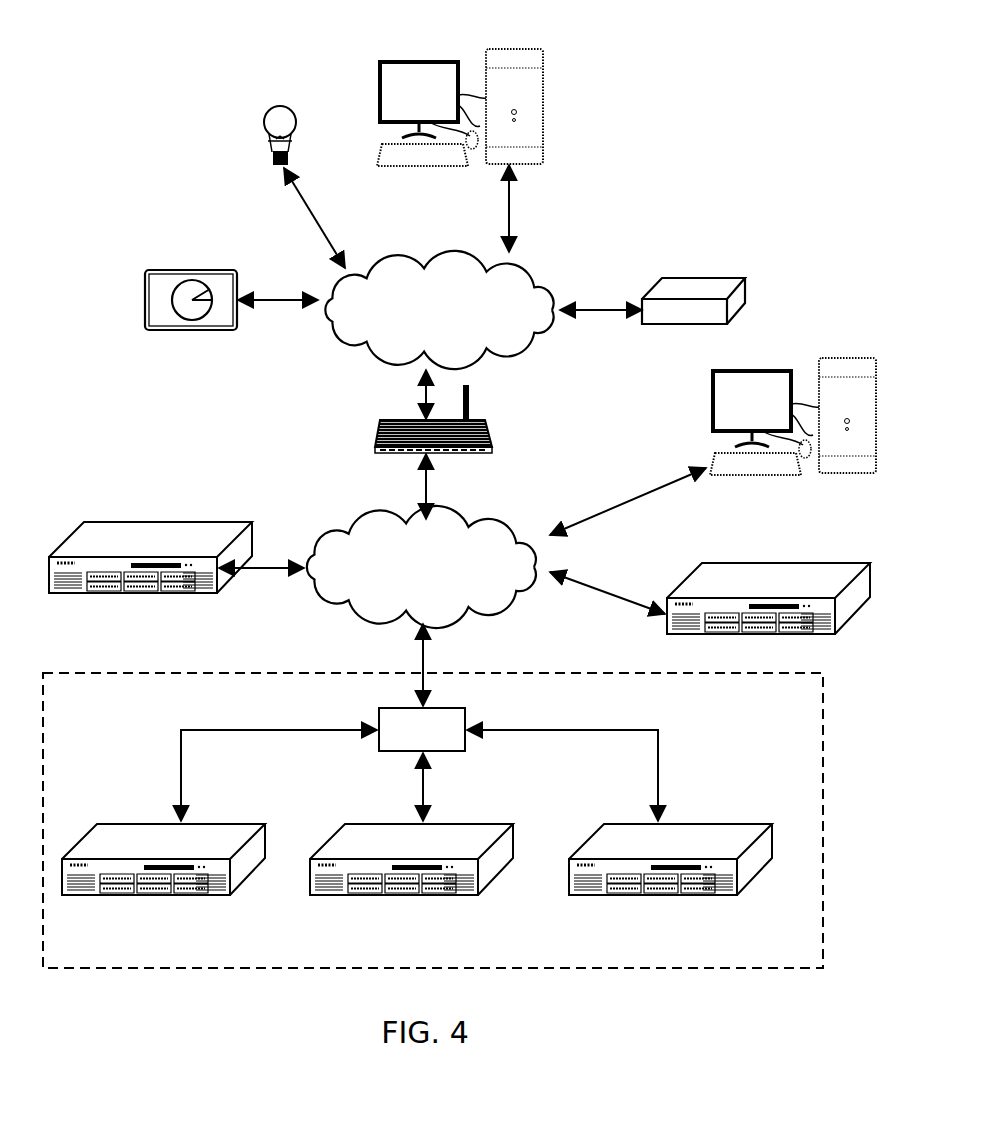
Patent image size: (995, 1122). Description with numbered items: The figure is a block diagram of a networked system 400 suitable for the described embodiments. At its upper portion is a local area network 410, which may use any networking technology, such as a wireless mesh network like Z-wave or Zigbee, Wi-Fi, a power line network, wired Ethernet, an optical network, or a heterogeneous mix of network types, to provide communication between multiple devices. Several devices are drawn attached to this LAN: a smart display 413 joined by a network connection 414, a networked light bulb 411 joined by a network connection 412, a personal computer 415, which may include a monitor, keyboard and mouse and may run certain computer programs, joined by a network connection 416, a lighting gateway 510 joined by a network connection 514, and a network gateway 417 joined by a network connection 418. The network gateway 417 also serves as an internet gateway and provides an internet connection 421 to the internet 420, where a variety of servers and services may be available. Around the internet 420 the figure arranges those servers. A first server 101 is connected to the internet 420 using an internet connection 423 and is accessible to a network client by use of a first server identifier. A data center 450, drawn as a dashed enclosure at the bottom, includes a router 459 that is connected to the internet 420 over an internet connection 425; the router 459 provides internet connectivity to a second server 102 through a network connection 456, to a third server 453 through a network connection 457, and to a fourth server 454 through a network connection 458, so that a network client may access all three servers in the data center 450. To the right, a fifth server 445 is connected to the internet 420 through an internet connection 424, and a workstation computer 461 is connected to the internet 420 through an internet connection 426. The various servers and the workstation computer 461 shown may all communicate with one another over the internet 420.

The networked system 400 is at (728, 90).
The local area network 410 is at (447, 257).
The networked light bulb 411 is at (265, 121).
The network connection 412 is at (315, 216).
The smart display 413 is at (190, 270).
The network connection 414 is at (275, 298).
The personal computer 415 is at (553, 68).
The network connection 416 is at (512, 217).
The network gateway 417 is at (375, 440).
The network connection 418 is at (420, 391).
The internet 420 is at (510, 510).
The internet connection 421 is at (423, 493).
The internet connection 423 is at (272, 562).
The internet connection 424 is at (620, 590).
The internet connection 425 is at (412, 649).
The internet connection 426 is at (600, 510).
The fifth server 445 is at (775, 563).
The data center 450 is at (140, 673).
The third server 453 is at (468, 823).
The fourth server 454 is at (705, 823).
The network connection 456 is at (181, 757).
The network connection 457 is at (423, 786).
The network connection 458 is at (658, 777).
The router 459 is at (388, 706).
The workstation computer 461 is at (828, 355).
The lighting gateway 510 is at (700, 278).
The network connection 514 is at (610, 300).
The first server 101 is at (165, 523).
The second server 102 is at (220, 823).